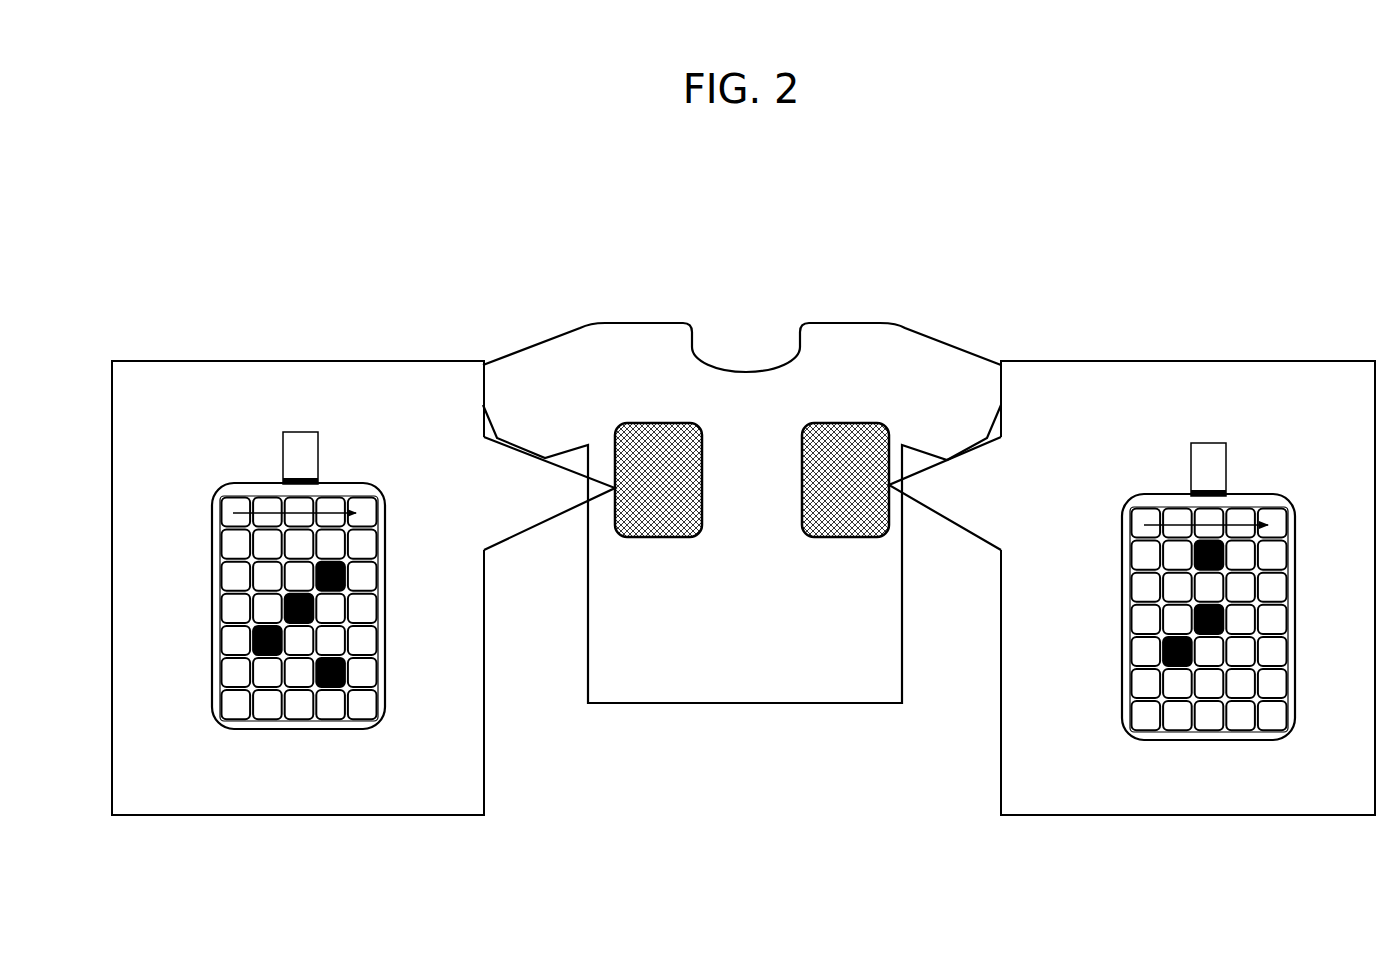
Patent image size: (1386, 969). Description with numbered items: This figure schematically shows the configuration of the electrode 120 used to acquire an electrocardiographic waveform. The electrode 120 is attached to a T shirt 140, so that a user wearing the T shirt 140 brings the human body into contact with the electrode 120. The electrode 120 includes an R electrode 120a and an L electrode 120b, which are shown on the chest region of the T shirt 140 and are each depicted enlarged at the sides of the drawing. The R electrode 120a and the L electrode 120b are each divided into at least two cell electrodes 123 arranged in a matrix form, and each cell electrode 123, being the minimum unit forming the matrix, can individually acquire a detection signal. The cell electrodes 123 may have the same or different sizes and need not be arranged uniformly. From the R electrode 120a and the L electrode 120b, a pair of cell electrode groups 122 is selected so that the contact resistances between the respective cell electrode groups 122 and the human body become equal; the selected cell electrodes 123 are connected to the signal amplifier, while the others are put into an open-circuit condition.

The electrode 120 is at (648, 250).
The R electrode 120a is at (670, 423).
The L electrode 120b is at (837, 423).
The cell electrode group 122 is at (383, 575).
The cell electrode 123 is at (237, 719).
The T shirt 140 is at (832, 705).